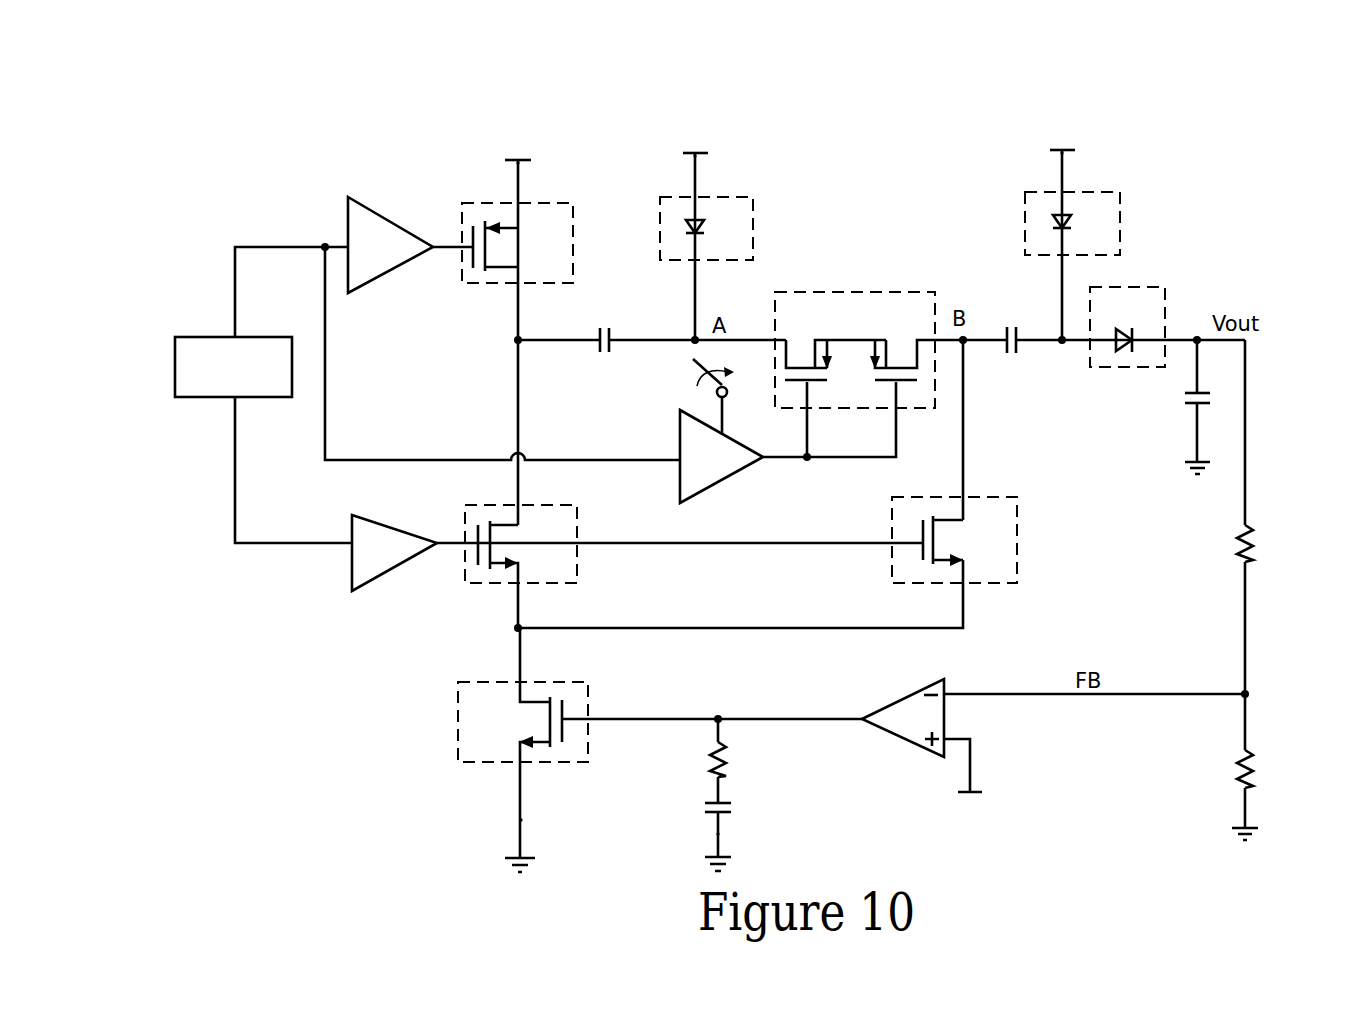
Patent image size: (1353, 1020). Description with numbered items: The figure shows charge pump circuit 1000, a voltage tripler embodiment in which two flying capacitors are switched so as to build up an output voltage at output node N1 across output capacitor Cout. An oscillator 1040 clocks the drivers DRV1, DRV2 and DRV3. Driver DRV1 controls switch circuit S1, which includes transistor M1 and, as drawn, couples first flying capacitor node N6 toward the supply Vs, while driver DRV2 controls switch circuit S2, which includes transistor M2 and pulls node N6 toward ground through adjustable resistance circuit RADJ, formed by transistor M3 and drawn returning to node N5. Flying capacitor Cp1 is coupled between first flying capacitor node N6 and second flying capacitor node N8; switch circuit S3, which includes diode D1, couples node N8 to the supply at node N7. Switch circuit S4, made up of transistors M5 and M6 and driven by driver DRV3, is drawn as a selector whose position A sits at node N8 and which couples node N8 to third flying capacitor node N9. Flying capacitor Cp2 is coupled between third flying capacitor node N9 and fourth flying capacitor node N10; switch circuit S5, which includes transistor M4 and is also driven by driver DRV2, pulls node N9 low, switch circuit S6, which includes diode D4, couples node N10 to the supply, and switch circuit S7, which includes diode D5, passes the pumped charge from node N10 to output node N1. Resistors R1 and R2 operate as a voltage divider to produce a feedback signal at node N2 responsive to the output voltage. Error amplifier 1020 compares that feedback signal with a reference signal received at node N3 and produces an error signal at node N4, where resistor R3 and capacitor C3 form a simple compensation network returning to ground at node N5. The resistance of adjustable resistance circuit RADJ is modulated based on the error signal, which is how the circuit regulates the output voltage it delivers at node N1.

The charge pump circuit 1000 is at (866, 119).
The oscillator 1040 is at (248, 399).
The error amplifier 1020 is at (900, 697).
The output node N1 is at (1198, 335).
The feedback node N2 is at (1243, 690).
The reference node N3 is at (972, 763).
The error signal node N4 is at (718, 716).
The ground node N5 is at (522, 818).
The first flying capacitor node N6 is at (514, 340).
The supply node Vs N7 is at (519, 165).
The second flying capacitor node N8 is at (693, 338).
The third flying capacitor node N9 is at (967, 345).
The fourth flying capacitor node N10 is at (1064, 345).
The switch circuit S1 is at (505, 259).
The switch circuit S2 is at (509, 566).
The switch circuit S3 is at (738, 228).
The switch circuit S4 is at (869, 333).
The switch circuit S5 is at (985, 540).
The switch circuit S6 is at (1105, 223).
The switch circuit S7 is at (1115, 348).
The transistor M1 is at (490, 284).
The transistor M2 is at (492, 585).
The transistor M3 is at (458, 745).
The transistor M4 is at (1018, 536).
The transistor M5 is at (835, 344).
The transistor M6 is at (916, 344).
The diode D1 is at (755, 222).
The diode D4 is at (1121, 221).
The diode D5 is at (1108, 368).
The flying capacitor Cp1 is at (602, 327).
The flying capacitor Cp2 is at (1004, 328).
The output capacitor Cout is at (1169, 407).
The resistor R1 is at (1263, 544).
The resistor R2 is at (1263, 769).
The resistor R3 is at (738, 759).
The capacitor C3 is at (737, 809).
The adjustable resistance circuit RADJ is at (473, 743).
The driver DRV1 is at (390, 245).
The driver DRV2 is at (394, 553).
The driver DRV3 is at (721, 456).
The supply voltage Vs is at (787, 140).
The switch position A/B A is at (714, 396).